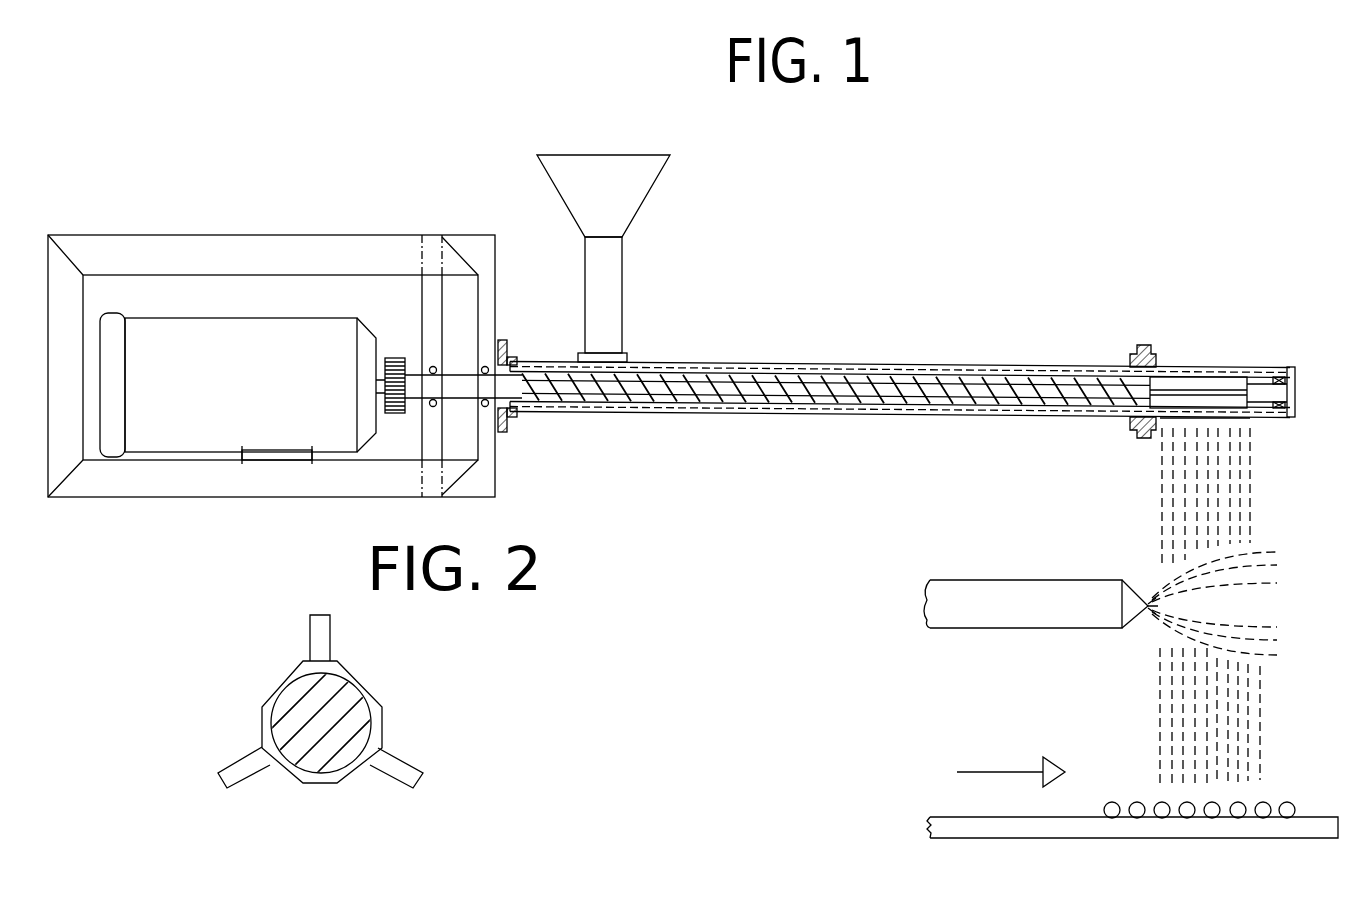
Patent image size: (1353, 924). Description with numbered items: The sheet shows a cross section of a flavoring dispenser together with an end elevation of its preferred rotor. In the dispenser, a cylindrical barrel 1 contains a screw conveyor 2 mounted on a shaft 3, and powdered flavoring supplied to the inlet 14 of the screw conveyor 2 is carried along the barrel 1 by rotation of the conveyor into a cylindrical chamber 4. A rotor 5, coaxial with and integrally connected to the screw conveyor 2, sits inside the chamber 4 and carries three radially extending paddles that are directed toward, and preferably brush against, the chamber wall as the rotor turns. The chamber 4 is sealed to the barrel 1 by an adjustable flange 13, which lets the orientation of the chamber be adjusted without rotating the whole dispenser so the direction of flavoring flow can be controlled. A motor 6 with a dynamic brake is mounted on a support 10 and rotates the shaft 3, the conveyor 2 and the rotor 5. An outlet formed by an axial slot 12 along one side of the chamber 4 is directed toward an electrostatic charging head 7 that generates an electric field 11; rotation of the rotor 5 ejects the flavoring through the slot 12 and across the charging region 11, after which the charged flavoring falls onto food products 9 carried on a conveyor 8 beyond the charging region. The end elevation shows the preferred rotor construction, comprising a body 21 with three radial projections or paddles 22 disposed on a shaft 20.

In FIG. 1, the cylindrical barrel 1 is at (900, 366).
In FIG. 1, the screw conveyor 2 is at (725, 385).
In FIG. 1, the shaft 3 is at (452, 388).
In FIG. 1, the cylindrical chamber 4 is at (1268, 377).
In FIG. 1, the rotor 5 is at (1188, 382).
In FIG. 1, the motor 6 is at (240, 402).
In FIG. 1, the electrostatic charging head 7 is at (1047, 597).
In FIG. 1, the conveyor 8 is at (1043, 828).
In FIG. 1, the food products 9 is at (1190, 816).
In FIG. 1, the support 10 is at (351, 253).
In FIG. 1, the electric field 11 is at (1213, 580).
In FIG. 1, the axial slot 12 is at (1227, 418).
In FIG. 1, the adjustable flange 13 is at (1138, 347).
In FIG. 1, the inlet 14 is at (603, 300).
In FIG. 2, the shaft 20 is at (297, 710).
In FIG. 2, the body 21 is at (357, 680).
In FIG. 2, the radial projections or paddles 22 is at (318, 637).